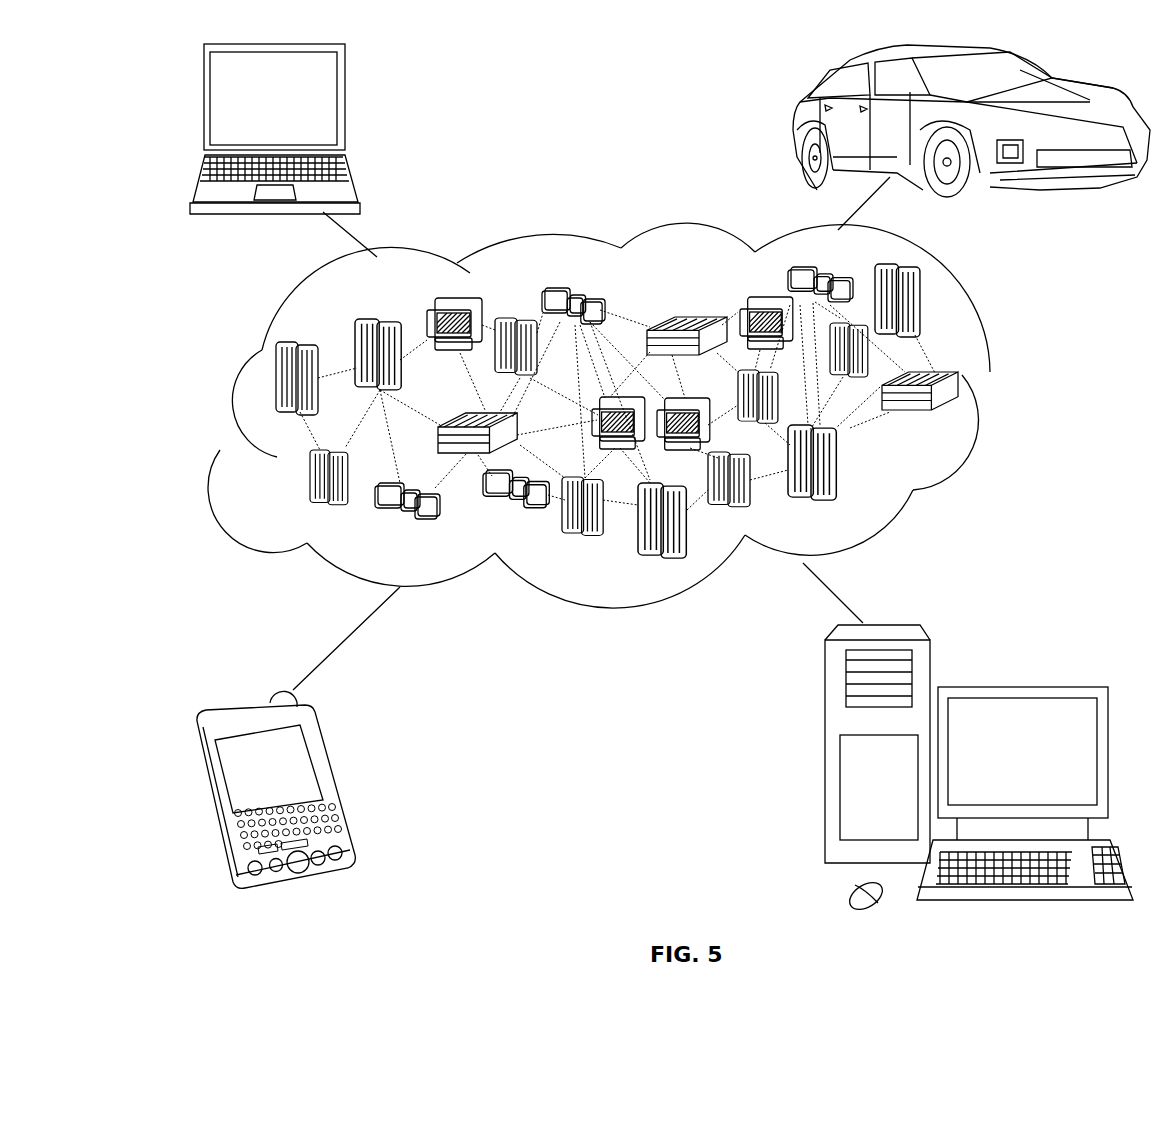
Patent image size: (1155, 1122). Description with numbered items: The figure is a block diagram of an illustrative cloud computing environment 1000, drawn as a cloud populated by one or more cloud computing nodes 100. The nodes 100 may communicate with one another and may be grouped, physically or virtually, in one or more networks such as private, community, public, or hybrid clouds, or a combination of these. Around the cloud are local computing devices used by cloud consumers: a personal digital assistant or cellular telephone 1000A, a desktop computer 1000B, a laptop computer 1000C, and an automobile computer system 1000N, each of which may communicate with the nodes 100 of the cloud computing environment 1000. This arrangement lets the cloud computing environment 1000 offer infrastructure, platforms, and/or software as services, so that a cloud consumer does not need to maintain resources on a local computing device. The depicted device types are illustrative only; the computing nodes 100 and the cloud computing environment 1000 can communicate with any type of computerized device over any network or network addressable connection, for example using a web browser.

The cloud computing environment 1000 is at (1018, 391).
The cloud computing nodes 100 is at (966, 421).
The personal digital assistant (PDA) or cellular telephone 1000A is at (337, 781).
The desktop computer 1000B is at (1020, 688).
The laptop computer 1000C is at (345, 108).
The automobile computer system 1000N is at (795, 125).